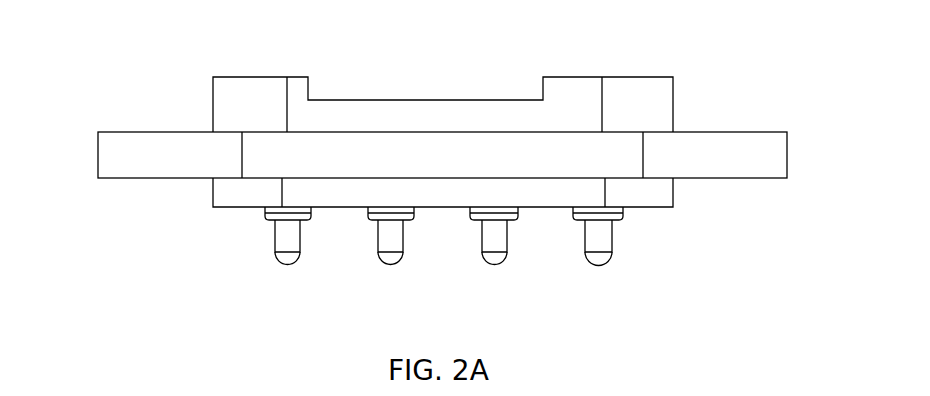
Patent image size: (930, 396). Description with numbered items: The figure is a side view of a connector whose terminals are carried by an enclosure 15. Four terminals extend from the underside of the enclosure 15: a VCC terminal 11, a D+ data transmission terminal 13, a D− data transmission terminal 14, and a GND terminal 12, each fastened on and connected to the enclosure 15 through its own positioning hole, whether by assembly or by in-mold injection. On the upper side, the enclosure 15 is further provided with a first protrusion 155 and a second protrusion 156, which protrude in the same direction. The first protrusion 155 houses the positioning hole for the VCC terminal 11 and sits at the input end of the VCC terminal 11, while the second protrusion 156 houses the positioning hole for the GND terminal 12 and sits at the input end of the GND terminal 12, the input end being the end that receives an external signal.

The enclosure 15 is at (437, 127).
The first protrusion 155 is at (319, 72).
The second protrusion 156 is at (551, 72).
The VCC terminal 11 is at (269, 262).
The GND terminal 12 is at (583, 262).
The D+ data transmission terminal 13 is at (371, 262).
The D− data transmission terminal 14 is at (478, 262).